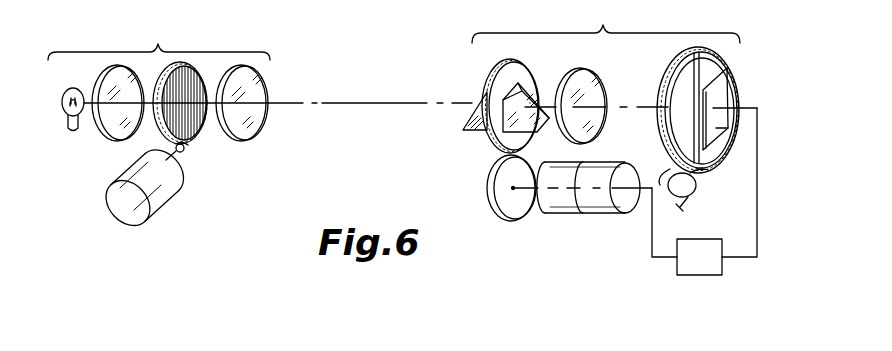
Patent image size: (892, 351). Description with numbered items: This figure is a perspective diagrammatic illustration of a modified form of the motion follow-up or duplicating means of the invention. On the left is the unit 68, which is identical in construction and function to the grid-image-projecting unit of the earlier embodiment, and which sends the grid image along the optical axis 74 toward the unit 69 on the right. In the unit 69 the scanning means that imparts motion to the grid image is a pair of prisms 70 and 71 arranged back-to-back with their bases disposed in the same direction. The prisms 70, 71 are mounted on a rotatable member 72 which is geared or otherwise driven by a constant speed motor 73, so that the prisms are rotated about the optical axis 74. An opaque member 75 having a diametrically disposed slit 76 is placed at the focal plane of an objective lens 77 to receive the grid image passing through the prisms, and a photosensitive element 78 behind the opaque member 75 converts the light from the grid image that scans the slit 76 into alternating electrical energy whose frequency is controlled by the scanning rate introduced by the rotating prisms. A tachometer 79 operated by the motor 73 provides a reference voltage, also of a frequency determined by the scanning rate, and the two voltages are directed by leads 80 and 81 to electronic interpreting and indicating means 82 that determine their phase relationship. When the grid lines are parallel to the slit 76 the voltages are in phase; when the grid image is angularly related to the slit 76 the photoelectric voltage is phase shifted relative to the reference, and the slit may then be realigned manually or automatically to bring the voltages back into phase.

The unit 68 is at (159, 126).
The unit 69 is at (622, 148).
The prism 70 is at (479, 103).
The prism 71 is at (525, 88).
The rotatable member 72 is at (502, 68).
The constant speed motor 73 is at (555, 213).
The optical axis 74 is at (350, 103).
The opaque member 75 is at (712, 62).
The slit 76 is at (677, 63).
The objective lens 77 is at (587, 77).
The photosensitive element 78 is at (718, 132).
The tachometer 79 is at (607, 214).
The lead 80 is at (660, 260).
The lead 81 is at (758, 177).
The electronic interpreting and indicating means 82 is at (712, 268).